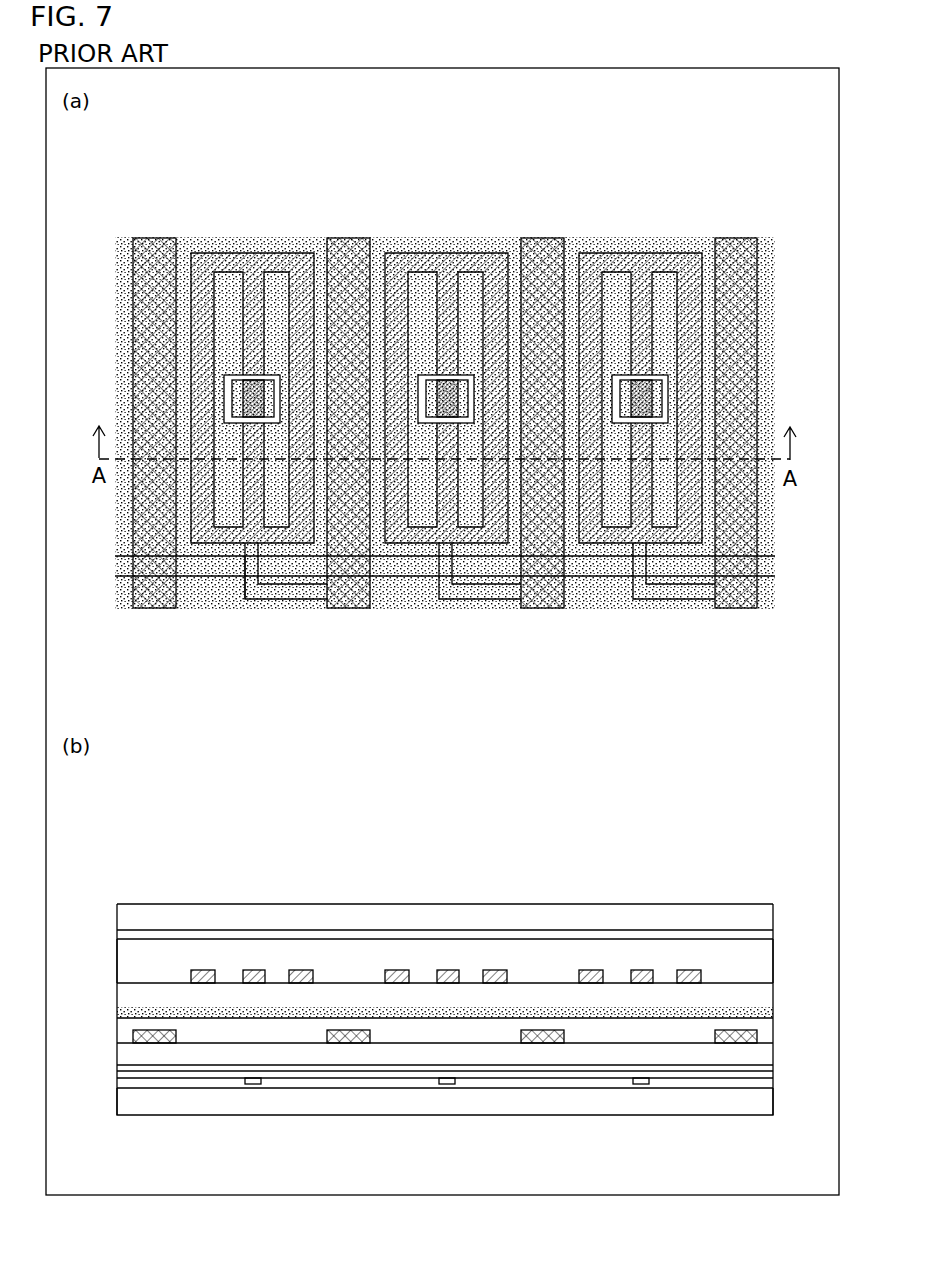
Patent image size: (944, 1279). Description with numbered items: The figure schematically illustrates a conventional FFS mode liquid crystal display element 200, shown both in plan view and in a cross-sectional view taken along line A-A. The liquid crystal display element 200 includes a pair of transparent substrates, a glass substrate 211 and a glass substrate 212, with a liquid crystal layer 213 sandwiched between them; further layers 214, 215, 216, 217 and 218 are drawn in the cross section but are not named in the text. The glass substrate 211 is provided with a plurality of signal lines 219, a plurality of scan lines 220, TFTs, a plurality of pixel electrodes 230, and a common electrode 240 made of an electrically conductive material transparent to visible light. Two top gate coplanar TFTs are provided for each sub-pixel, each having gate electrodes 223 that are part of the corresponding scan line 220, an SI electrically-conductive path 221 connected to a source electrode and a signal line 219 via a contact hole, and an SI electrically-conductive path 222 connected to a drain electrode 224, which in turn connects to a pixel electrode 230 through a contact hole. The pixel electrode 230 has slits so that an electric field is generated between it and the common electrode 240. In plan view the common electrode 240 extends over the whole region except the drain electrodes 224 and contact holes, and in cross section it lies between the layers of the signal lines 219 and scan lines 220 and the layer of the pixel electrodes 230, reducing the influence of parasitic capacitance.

The FFS mode liquid crystal display element 200 is at (740, 172).
The glass substrate 211 is at (769, 1113).
The glass substrate 212 is at (769, 915).
The liquid crystal layer 213 is at (769, 963).
The gate insulating film 214 is at (769, 1090).
The semiconductor layer 215 is at (769, 1072).
The insulating film 216 is at (769, 940).
The interlayer insulating film 217 is at (769, 1030).
The alignment film 218 is at (769, 987).
The signal line 219 is at (349, 240).
The scan line 220 is at (595, 574).
The SI electrically-conductive path 221 is at (258, 598).
The SI electrically-conductive path 222 is at (240, 503).
The gate electrode 223 is at (245, 600).
The drain electrode 224 is at (240, 391).
The pixel electrode 230 is at (251, 252).
The common electrode 240 is at (181, 243).